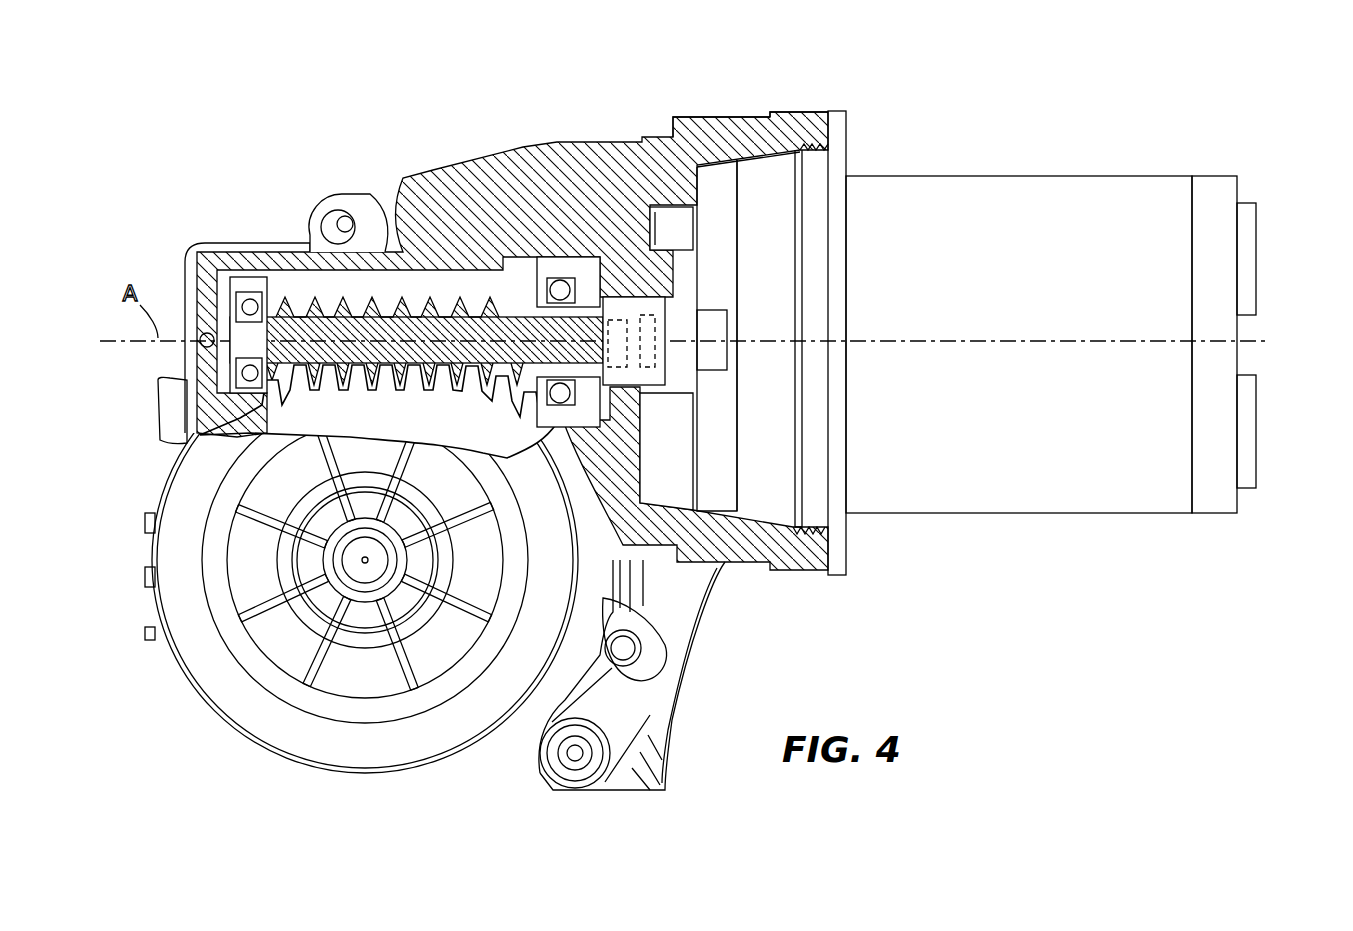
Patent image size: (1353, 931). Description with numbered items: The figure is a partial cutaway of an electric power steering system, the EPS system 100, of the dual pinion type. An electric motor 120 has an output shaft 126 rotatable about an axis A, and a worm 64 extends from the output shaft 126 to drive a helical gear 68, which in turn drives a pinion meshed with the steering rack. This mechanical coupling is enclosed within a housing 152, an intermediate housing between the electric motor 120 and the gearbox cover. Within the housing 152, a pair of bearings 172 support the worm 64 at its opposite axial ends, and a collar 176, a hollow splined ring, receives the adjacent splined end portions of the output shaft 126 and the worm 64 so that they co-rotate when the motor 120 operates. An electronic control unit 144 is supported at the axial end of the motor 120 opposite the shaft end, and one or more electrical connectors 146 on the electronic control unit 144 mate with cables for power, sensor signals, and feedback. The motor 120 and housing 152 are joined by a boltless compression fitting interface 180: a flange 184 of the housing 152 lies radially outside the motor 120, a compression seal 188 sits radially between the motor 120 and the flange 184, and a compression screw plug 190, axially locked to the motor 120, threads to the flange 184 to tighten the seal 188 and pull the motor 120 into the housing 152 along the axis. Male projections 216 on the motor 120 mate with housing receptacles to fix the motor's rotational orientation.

The EPS system 100 is at (230, 162).
The worm 64 is at (353, 297).
The helical gear 68 is at (363, 412).
The bearings 172 is at (250, 307).
The collar 176 is at (633, 298).
The male projections 216 is at (663, 220).
The flange 184 is at (693, 113).
The compression fitting interface 180 is at (758, 107).
The compression seal 188 is at (768, 190).
The compression screw plug 190 is at (818, 162).
The output shaft 126 is at (665, 353).
The electric motor 120 is at (1000, 502).
The electronic control unit 144 is at (1218, 502).
The electrical connectors 146 is at (1244, 205).
The housing 152 is at (668, 711).